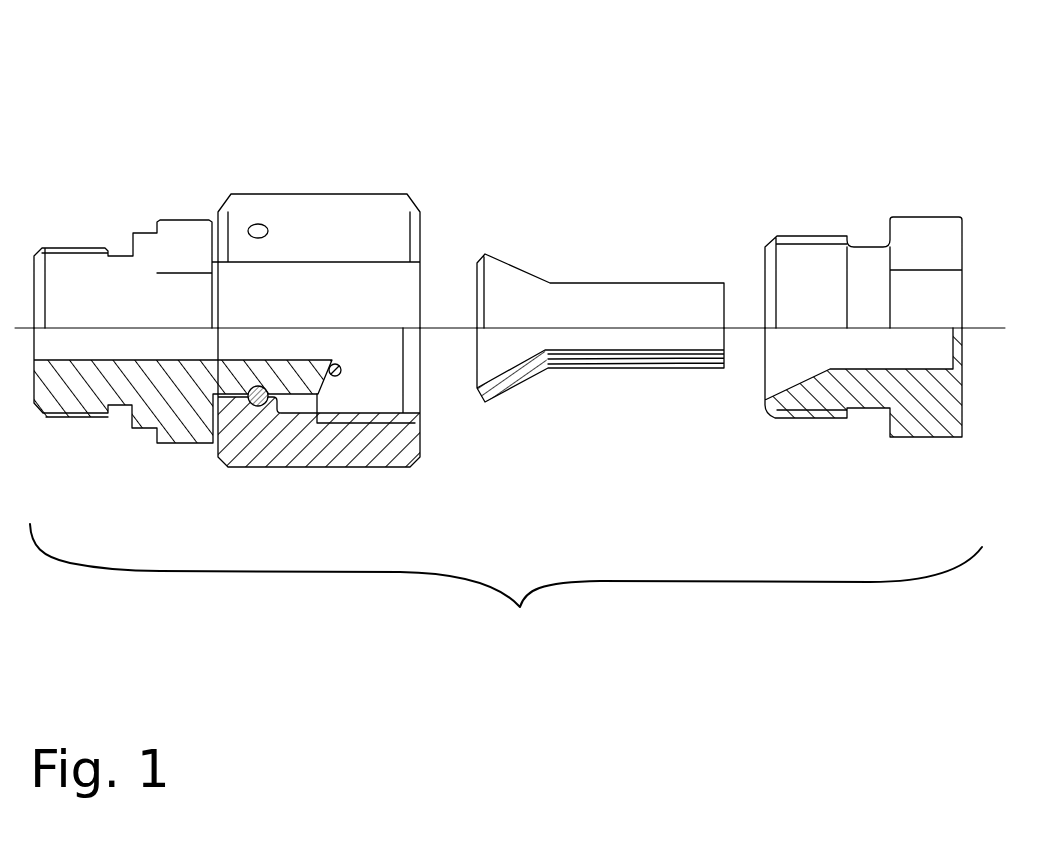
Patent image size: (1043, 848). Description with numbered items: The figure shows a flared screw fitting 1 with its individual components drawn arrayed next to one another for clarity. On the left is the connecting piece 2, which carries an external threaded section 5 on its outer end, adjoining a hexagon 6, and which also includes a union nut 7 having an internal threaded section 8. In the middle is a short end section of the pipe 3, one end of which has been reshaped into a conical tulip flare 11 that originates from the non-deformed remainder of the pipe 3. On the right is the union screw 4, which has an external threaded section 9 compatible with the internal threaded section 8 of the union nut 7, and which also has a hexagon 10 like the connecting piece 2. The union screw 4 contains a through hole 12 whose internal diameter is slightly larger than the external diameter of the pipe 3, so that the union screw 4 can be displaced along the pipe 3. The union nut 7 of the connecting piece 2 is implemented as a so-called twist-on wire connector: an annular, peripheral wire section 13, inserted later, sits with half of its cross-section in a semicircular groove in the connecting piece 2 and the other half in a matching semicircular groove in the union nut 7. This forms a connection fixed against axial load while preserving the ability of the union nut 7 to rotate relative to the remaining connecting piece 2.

The flared screw fitting 1 is at (520, 615).
The connecting piece 2 is at (153, 120).
The pipe 3 is at (630, 168).
The union screw 4 is at (870, 135).
The external threaded section 5 is at (67, 190).
The hexagon 6 is at (177, 218).
The union nut 7 is at (293, 152).
The internal threaded section 8 is at (362, 415).
The external threaded section 9 is at (813, 236).
The hexagon 10 is at (921, 217).
The tulip flare 11 is at (527, 222).
The through hole 12 is at (923, 348).
The wire section 13 is at (259, 386).